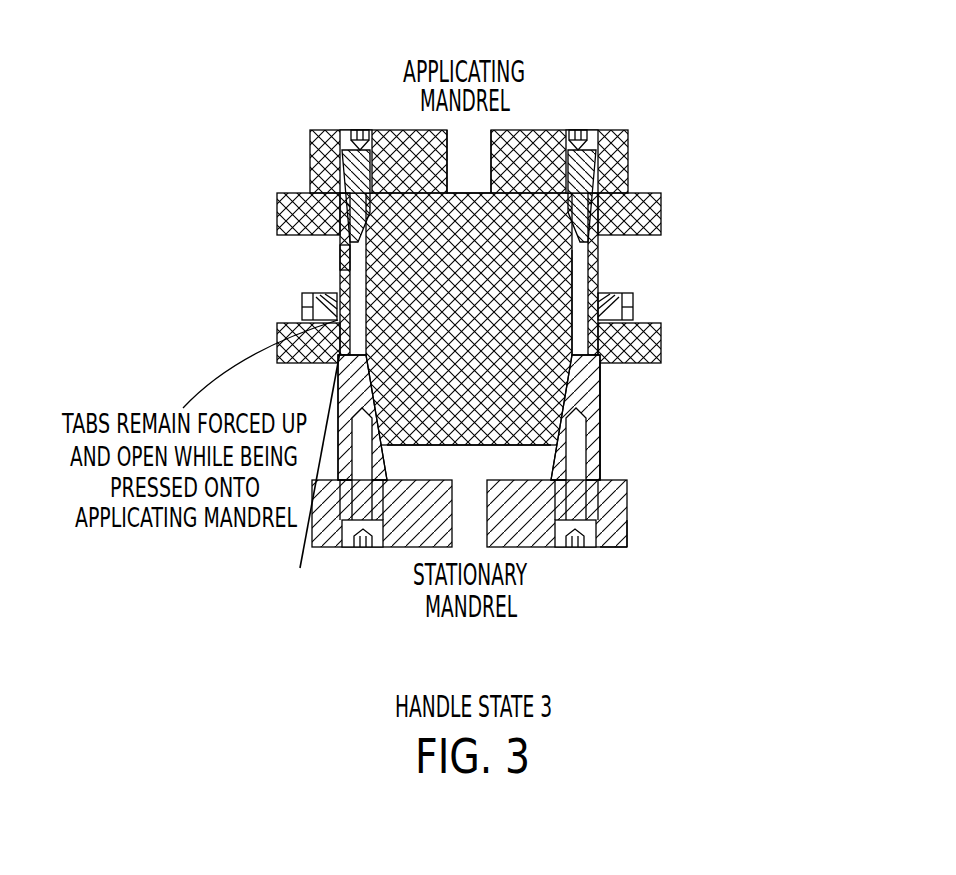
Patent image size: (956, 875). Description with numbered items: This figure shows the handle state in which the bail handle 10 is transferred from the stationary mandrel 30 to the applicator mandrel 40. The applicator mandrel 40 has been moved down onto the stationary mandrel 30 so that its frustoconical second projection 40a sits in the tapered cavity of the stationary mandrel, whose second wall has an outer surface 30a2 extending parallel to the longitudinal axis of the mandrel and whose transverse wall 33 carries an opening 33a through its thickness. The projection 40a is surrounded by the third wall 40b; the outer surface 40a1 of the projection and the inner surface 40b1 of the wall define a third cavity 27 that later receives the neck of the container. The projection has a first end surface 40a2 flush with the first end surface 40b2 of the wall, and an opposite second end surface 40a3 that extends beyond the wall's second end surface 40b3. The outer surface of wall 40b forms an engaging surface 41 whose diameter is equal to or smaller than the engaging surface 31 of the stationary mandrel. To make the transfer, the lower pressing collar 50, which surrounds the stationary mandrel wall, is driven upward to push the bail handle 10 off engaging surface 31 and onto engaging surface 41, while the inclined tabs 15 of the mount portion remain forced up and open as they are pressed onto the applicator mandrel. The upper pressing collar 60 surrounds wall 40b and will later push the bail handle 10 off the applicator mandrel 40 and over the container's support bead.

The second projection 40a is at (445, 240).
The third cavity 27 is at (325, 128).
The first end surface 40a2 is at (466, 193).
The inner surface 40b1 is at (354, 238).
The applicator mandrel 40 is at (625, 192).
The first end surface 40b2 is at (528, 218).
The upper pressing collar 60 is at (662, 212).
The engaging surface 41 is at (336, 256).
The third wall 40b is at (598, 256).
The inclined tabs 15 is at (313, 293).
The bail handle 10 is at (626, 293).
The lower pressing collar 50 is at (662, 347).
The outer surface 40a1 is at (573, 307).
The engaging surface 31 is at (592, 402).
The outer surface 30a2 is at (602, 444).
The stationary mandrel 30 is at (614, 527).
The transverse wall 33 is at (622, 533).
The second end surface 40b3 is at (304, 477).
The base surface of stationary mandrel 33a is at (452, 520).
The second end surface 40a3 is at (477, 447).